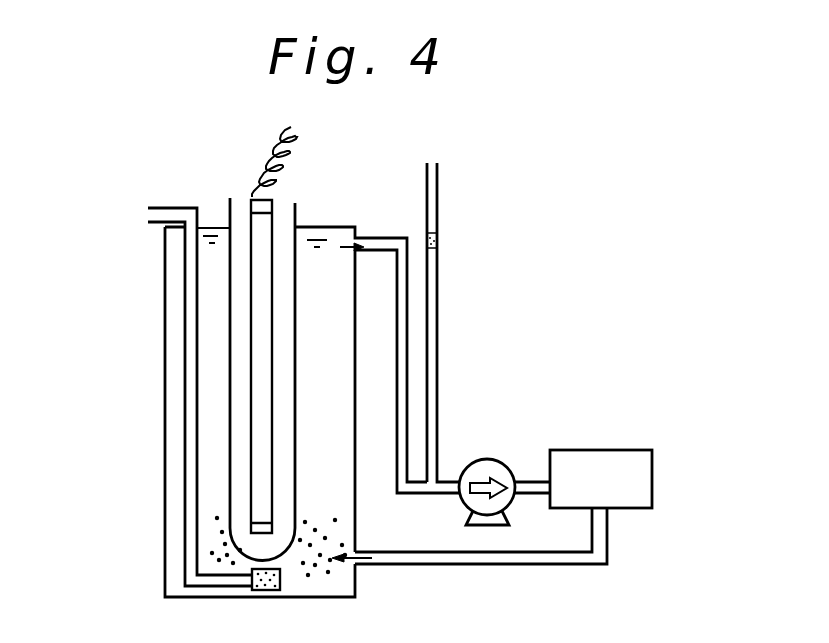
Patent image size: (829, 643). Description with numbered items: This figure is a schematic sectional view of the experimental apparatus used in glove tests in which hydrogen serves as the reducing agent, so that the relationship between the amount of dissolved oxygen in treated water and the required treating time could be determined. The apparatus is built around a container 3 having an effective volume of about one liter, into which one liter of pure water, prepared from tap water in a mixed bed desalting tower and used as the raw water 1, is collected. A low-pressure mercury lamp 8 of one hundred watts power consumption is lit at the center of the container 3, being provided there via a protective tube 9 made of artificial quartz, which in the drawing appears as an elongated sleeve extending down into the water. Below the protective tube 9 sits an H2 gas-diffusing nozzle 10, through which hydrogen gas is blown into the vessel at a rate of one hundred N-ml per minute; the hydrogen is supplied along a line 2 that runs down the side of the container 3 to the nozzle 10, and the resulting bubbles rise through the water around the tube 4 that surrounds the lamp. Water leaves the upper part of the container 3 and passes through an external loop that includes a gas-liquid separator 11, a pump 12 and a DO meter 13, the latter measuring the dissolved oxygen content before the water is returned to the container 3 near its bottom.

The raw water 1 is at (206, 297).
The gas inlet pipe 2 is at (134, 214).
The container 3 is at (158, 436).
The outer tube 4 is at (237, 196).
The low-pressure mercury lamp 8 is at (272, 199).
The protective tube 9 is at (296, 212).
The H2 gas-diffusing nozzle 10 is at (267, 590).
The gas-liquid separator 11 is at (438, 193).
The pump 12 is at (495, 459).
The DO meter 13 is at (607, 450).